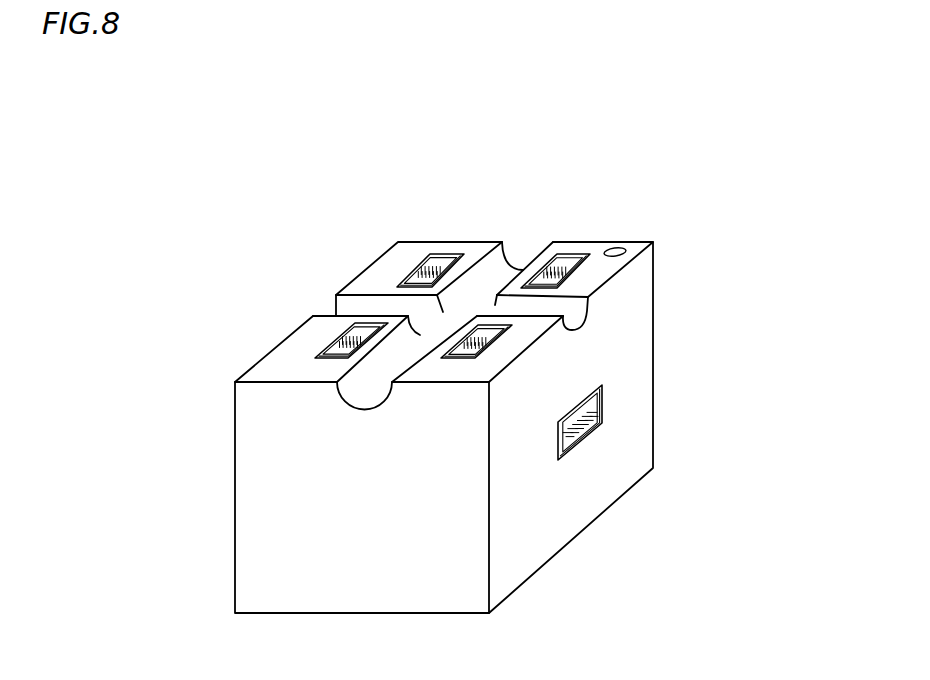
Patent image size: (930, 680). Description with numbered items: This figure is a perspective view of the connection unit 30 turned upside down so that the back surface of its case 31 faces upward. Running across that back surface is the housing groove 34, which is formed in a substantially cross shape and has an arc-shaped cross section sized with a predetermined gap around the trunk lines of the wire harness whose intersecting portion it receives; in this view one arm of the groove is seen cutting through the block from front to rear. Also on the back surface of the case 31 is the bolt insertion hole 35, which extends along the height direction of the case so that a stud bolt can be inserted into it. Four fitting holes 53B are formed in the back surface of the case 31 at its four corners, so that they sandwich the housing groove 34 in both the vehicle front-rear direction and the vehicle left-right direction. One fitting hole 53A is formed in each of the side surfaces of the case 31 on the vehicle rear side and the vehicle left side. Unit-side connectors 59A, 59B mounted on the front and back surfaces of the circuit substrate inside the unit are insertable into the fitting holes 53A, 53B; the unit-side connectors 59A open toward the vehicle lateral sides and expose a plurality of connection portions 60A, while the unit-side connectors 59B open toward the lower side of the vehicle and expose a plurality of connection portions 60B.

The connection unit 30 is at (431, 236).
The case 31 is at (477, 305).
The housing groove 34 is at (499, 268).
The bolt insertion hole 35 is at (615, 255).
The fitting hole 53A is at (603, 386).
The fitting holes 53B is at (345, 336).
The unit-side connectors 59A is at (603, 402).
The unit-side connectors 59B is at (336, 346).
The connection portions 60A is at (604, 414).
The connection portions 60B is at (322, 353).